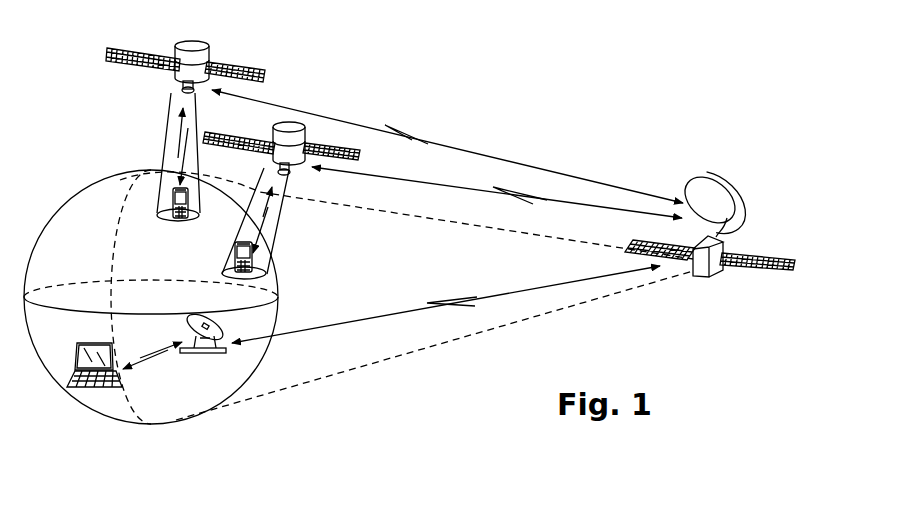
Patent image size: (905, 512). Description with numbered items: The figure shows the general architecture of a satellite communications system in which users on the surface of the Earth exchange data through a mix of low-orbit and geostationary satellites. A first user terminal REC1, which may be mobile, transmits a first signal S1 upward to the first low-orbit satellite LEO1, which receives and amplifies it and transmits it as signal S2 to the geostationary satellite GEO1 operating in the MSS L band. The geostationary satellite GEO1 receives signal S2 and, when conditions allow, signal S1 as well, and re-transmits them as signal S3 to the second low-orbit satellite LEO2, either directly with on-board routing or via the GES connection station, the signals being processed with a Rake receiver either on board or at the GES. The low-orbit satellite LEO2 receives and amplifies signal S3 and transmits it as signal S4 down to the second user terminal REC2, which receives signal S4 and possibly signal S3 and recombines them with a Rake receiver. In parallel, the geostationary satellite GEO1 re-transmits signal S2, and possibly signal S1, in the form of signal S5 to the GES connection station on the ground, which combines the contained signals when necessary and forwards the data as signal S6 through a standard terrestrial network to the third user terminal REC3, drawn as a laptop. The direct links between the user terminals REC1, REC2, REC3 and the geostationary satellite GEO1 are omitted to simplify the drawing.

The first low-orbit satellite LEO1 is at (188, 47).
The second low-orbit satellite LEO2 is at (297, 127).
The geostationary satellite GEO1 is at (711, 197).
The first signal S1 is at (180, 128).
The second signal S2 is at (493, 150).
The third signal S3 is at (415, 182).
The fourth signal S4 is at (277, 207).
The fifth signal S5 is at (395, 317).
The sixth signal S6 is at (148, 360).
The first user terminal REC1 is at (173, 200).
The second user terminal REC2 is at (253, 259).
The third user terminal REC3 is at (97, 388).
The GES connection station GES is at (208, 355).